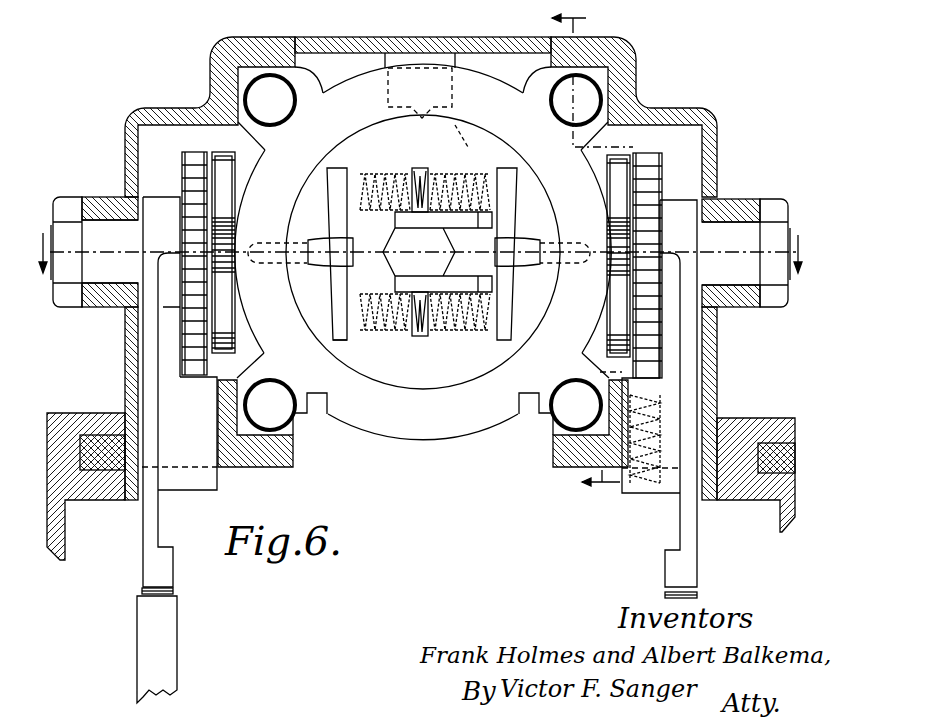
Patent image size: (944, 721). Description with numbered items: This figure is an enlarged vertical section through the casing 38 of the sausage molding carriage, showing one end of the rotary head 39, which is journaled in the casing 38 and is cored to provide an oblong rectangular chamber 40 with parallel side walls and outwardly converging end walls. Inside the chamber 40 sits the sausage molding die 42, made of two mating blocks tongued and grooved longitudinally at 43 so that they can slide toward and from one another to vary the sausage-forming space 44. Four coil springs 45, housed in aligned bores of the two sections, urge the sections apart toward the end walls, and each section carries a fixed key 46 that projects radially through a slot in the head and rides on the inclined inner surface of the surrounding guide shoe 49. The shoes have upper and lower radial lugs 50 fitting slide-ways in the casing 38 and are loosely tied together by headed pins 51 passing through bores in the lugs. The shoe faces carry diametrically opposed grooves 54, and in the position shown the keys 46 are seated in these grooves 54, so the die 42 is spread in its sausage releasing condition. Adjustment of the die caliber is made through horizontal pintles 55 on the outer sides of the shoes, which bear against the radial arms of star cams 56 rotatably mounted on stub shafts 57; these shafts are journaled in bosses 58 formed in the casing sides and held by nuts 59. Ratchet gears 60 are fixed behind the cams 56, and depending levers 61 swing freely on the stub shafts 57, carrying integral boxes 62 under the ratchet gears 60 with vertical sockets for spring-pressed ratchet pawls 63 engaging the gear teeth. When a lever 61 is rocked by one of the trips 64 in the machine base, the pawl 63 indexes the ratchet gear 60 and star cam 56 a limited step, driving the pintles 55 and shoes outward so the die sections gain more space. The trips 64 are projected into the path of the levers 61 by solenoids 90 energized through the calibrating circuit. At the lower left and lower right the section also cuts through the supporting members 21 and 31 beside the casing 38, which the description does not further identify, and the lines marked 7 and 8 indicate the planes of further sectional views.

The section line 7- 7 is at (422, 253).
The section line 8- 8 is at (586, 255).
The left supporting bracket 21 is at (64, 524).
The right supporting bracket 31 is at (733, 497).
The casing 38 is at (690, 110).
The rotary head 39 is at (437, 378).
The chamber 40 is at (337, 170).
The sausage molding die 42 is at (340, 292).
The tongue and groove 43 is at (483, 210).
The sausage-forming space 44 is at (398, 257).
The coil springs 45 is at (418, 167).
The key 46 is at (323, 268).
The guide shoe 49 is at (477, 83).
The radial lugs 50 is at (641, 78).
The headed pins 51 is at (586, 88).
The seats or grooves 54 is at (282, 243).
The pintles 55 is at (612, 258).
The star cams 56 is at (633, 150).
The stub shafts 57 is at (105, 272).
The bosses 58 is at (740, 200).
The nuts 59 is at (772, 306).
The ratchet gears 60 is at (638, 173).
The levers 61 is at (147, 517).
The boxes 62 is at (658, 491).
The ratchet pawls 63 is at (183, 374).
The trips 64 is at (142, 590).
The solenoids 90 is at (143, 627).